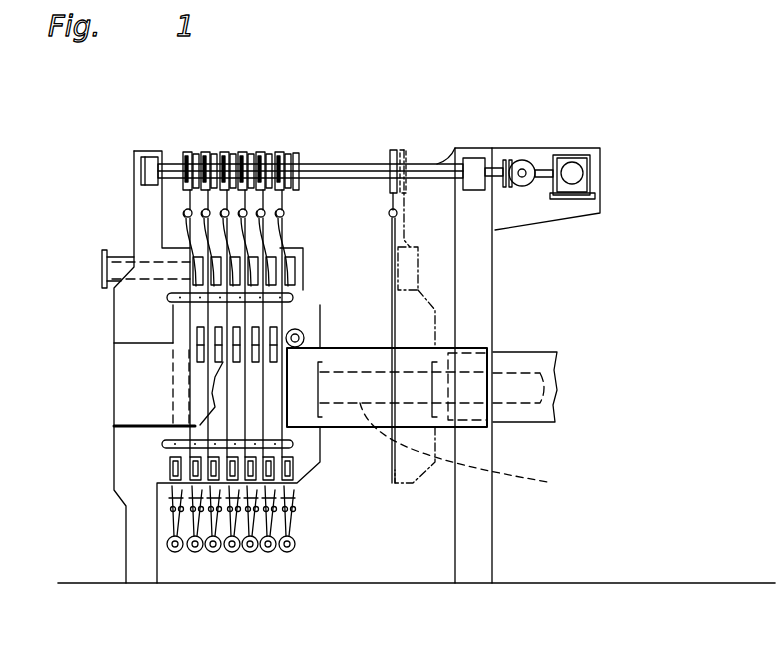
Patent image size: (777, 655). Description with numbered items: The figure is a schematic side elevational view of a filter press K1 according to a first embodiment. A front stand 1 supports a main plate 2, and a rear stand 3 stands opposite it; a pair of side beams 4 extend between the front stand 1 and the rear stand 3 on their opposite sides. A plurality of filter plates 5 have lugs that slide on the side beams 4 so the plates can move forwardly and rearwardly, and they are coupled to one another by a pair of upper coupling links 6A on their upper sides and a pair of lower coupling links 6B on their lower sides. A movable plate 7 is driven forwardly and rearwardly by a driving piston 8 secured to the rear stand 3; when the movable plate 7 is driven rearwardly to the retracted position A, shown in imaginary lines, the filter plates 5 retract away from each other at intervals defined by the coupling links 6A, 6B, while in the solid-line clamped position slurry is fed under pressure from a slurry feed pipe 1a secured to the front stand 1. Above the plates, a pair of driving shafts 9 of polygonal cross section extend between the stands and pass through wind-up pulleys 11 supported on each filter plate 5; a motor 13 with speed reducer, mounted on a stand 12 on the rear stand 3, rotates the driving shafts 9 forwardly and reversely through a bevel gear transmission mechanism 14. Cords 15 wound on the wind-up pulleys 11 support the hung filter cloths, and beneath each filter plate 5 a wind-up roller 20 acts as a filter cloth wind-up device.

The front stand 1 is at (128, 332).
The slurry feed pipe 1a is at (128, 260).
The main plate 2 is at (178, 314).
The rear stand 3 is at (482, 282).
The side beams 4 is at (440, 348).
The filter plates 5 is at (175, 428).
The upper coupling links 6A is at (297, 305).
The lower coupling links 6B is at (167, 449).
The movable plate 7 is at (308, 327).
The driving piston 8 is at (472, 454).
The driving shafts 9 is at (357, 160).
The wind-up pulleys 11 is at (283, 153).
The stand 12 is at (577, 200).
The motor 13 is at (575, 173).
The bevel gear transmission mechanism 14 is at (513, 157).
The cords 15 is at (295, 160).
The wind-up roller 20 is at (175, 552).
The retracted position A is at (417, 487).
The filter press K1 is at (297, 519).